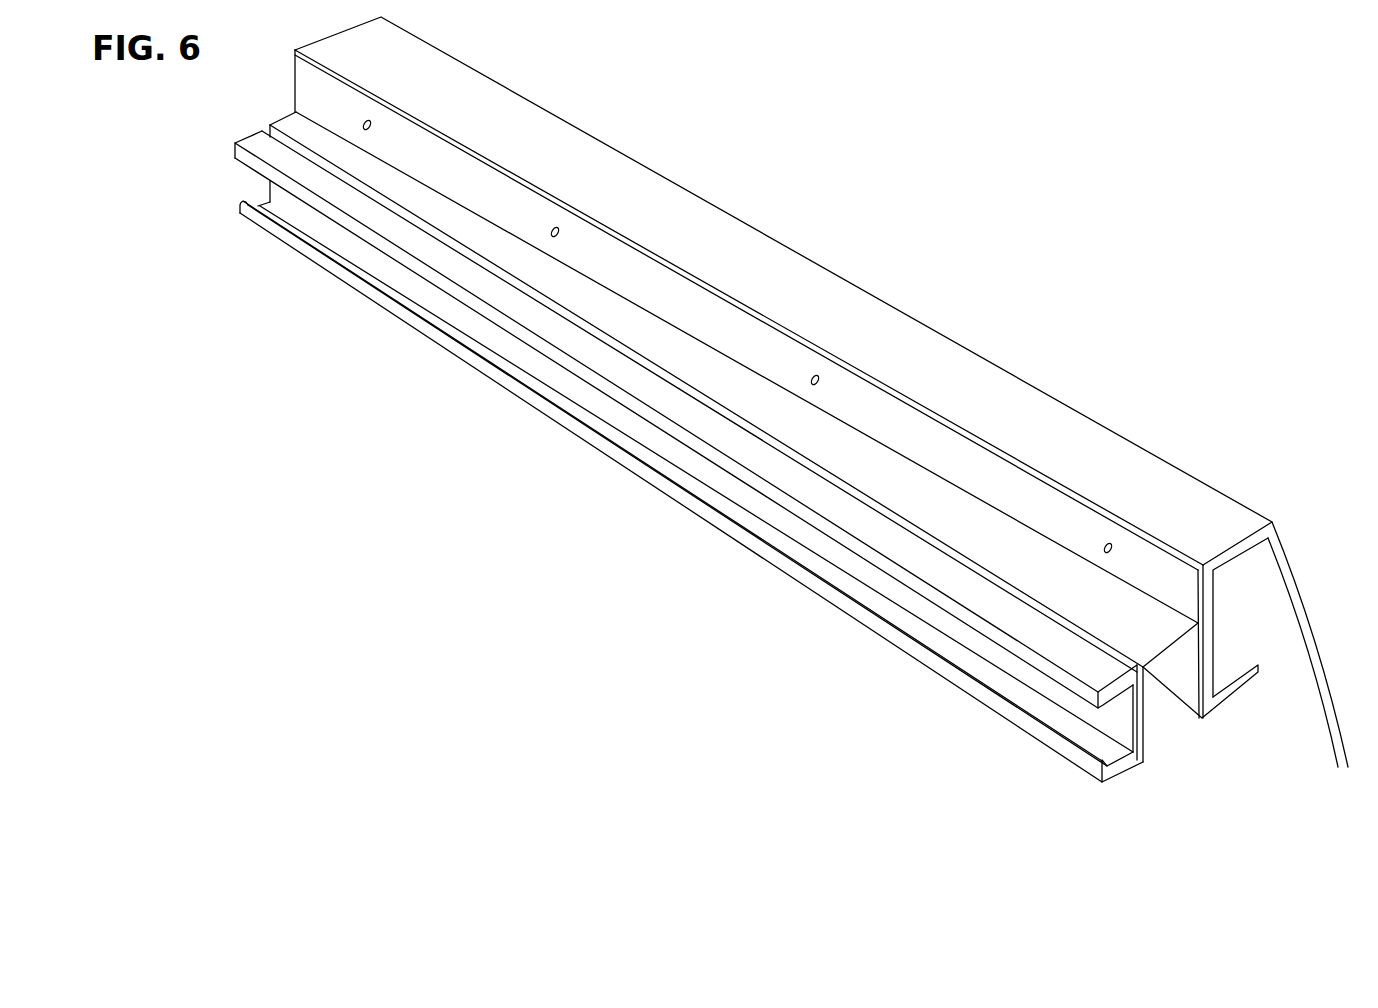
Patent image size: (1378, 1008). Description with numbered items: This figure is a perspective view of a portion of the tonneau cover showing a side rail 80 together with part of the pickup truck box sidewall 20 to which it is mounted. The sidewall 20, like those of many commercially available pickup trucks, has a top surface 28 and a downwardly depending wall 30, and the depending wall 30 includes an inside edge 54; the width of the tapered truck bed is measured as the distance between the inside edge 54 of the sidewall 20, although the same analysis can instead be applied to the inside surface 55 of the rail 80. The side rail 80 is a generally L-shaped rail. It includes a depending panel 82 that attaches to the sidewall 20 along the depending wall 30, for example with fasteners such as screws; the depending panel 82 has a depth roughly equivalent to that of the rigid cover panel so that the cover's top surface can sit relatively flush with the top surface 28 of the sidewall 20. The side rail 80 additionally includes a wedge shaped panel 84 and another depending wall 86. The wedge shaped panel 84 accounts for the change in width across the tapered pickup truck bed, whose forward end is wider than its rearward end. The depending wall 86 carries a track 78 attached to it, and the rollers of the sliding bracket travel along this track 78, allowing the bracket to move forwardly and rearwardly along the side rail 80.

The sidewall 20 is at (1301, 592).
The top surface 28 is at (930, 358).
The downwardly depending wall 30 is at (1210, 622).
The inside edge 54 is at (1188, 682).
The inside surface 55 is at (638, 270).
The track 78 is at (1000, 660).
The side rail 80 is at (1170, 547).
The depending panel 82 is at (983, 463).
The wedge shaped panel 84 is at (1048, 580).
The depending wall 86 is at (1145, 733).